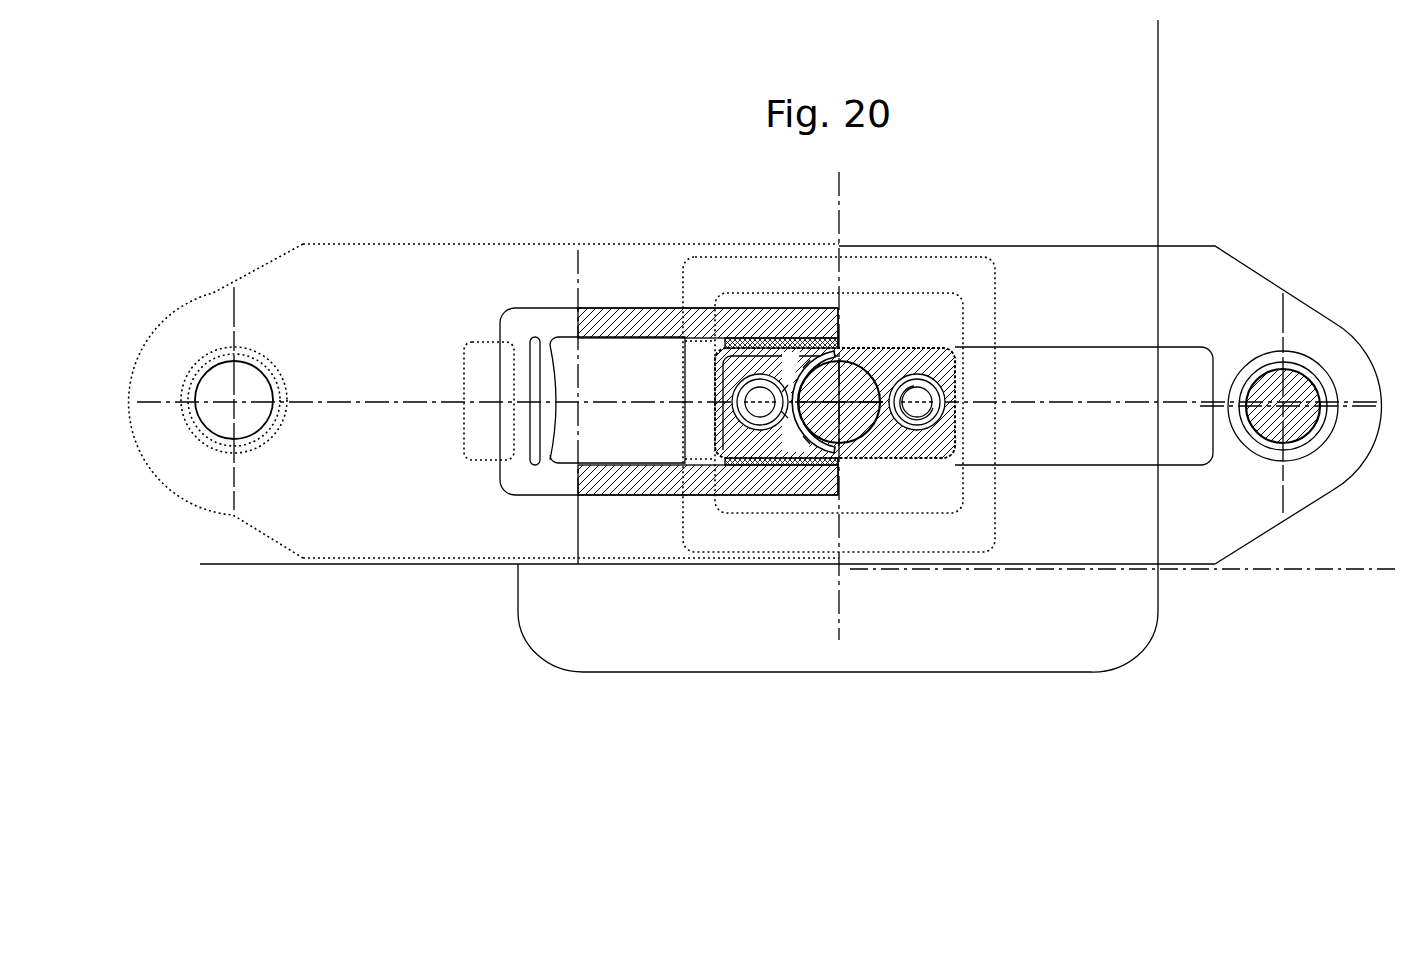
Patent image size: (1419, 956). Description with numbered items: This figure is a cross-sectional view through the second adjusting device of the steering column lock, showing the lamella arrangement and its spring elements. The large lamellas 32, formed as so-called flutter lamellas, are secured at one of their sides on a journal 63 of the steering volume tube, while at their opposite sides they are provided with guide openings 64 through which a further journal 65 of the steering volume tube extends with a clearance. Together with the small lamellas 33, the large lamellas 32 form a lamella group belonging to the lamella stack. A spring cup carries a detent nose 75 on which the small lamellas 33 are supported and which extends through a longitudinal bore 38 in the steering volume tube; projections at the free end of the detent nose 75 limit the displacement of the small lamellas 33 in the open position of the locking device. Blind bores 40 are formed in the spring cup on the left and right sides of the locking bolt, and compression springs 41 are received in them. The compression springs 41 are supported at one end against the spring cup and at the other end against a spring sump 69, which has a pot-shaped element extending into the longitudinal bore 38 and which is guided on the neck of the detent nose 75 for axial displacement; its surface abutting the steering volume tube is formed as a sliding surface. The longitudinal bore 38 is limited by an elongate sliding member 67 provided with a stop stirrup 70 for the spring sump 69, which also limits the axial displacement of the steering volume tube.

The large lamellas 32 is at (1093, 268).
The small lamellas 33 is at (977, 380).
The longitudinal bore 38 is at (613, 373).
The blind bores 40 is at (930, 417).
The compression springs 41 is at (753, 423).
The journal 63 is at (213, 378).
The guide openings 64 is at (1322, 427).
The journal 65 is at (1270, 380).
The elongate sliding member 67 is at (565, 318).
The spring sump 69 is at (923, 347).
The stop stirrup 70 is at (540, 378).
The detent nose 75 is at (807, 330).